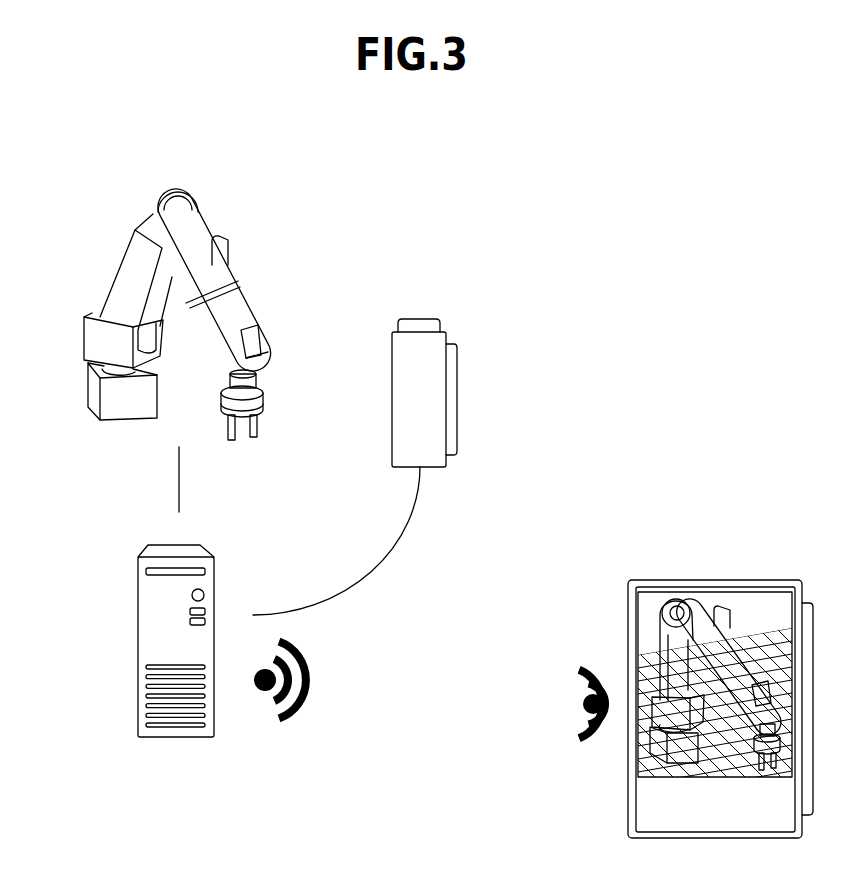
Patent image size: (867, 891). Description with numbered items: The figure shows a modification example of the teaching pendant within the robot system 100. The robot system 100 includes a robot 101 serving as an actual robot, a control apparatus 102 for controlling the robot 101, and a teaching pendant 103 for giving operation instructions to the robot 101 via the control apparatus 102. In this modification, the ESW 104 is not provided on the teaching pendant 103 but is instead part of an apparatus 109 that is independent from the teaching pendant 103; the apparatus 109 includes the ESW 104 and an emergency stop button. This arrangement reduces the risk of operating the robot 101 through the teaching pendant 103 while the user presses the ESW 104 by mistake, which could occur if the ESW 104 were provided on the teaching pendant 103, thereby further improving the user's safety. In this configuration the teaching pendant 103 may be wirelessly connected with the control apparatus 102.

The robot system 100 is at (652, 191).
The robot 101 is at (118, 277).
The control apparatus 102 is at (138, 643).
The teaching pendant 103 is at (721, 578).
The ESW 104 is at (457, 393).
The apparatus 109 is at (432, 295).